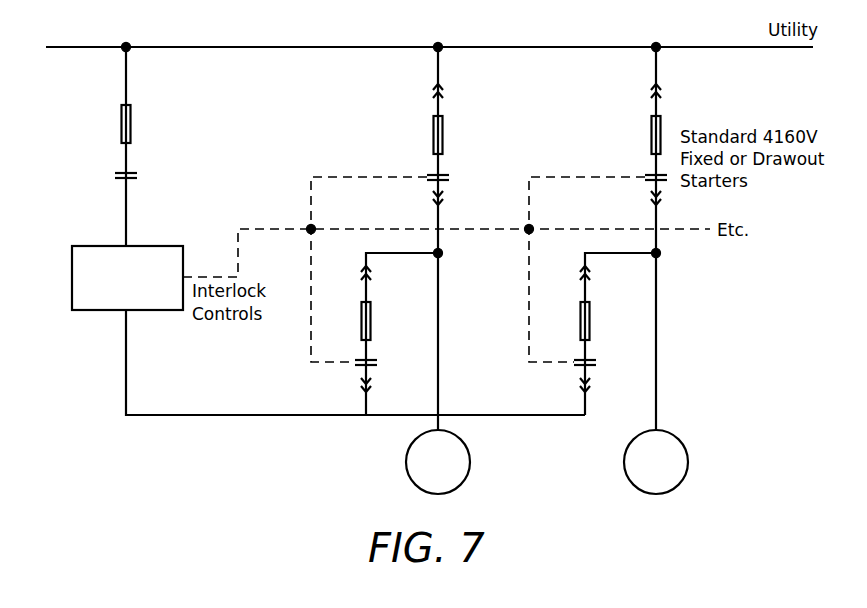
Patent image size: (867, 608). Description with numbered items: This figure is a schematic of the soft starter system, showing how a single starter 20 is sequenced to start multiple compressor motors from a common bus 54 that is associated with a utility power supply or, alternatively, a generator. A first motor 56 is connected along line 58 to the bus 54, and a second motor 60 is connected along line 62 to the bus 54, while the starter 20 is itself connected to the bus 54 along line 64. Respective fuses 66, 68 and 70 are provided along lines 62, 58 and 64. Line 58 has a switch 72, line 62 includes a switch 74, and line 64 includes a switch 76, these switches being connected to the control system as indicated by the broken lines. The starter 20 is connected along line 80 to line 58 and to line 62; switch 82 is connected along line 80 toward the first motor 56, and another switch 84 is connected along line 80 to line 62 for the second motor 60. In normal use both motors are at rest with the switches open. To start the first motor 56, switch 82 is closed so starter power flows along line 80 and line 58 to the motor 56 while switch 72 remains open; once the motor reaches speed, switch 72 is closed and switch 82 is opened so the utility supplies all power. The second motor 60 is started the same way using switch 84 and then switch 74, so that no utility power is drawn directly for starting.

The starter 20 is at (97, 312).
The common bus 54 is at (600, 46).
The first motor 56 is at (408, 476).
The line 58 is at (437, 306).
The second motor 60 is at (683, 452).
The line 62 is at (656, 360).
The line 64 is at (125, 80).
The fuse 66 is at (652, 134).
The fuse 68 is at (434, 138).
The fuse 70 is at (122, 137).
The switch 72 is at (448, 176).
The switch 74 is at (651, 181).
The switch 76 is at (138, 174).
The line 80 is at (183, 416).
The switch 82 is at (360, 364).
The switch 84 is at (579, 364).